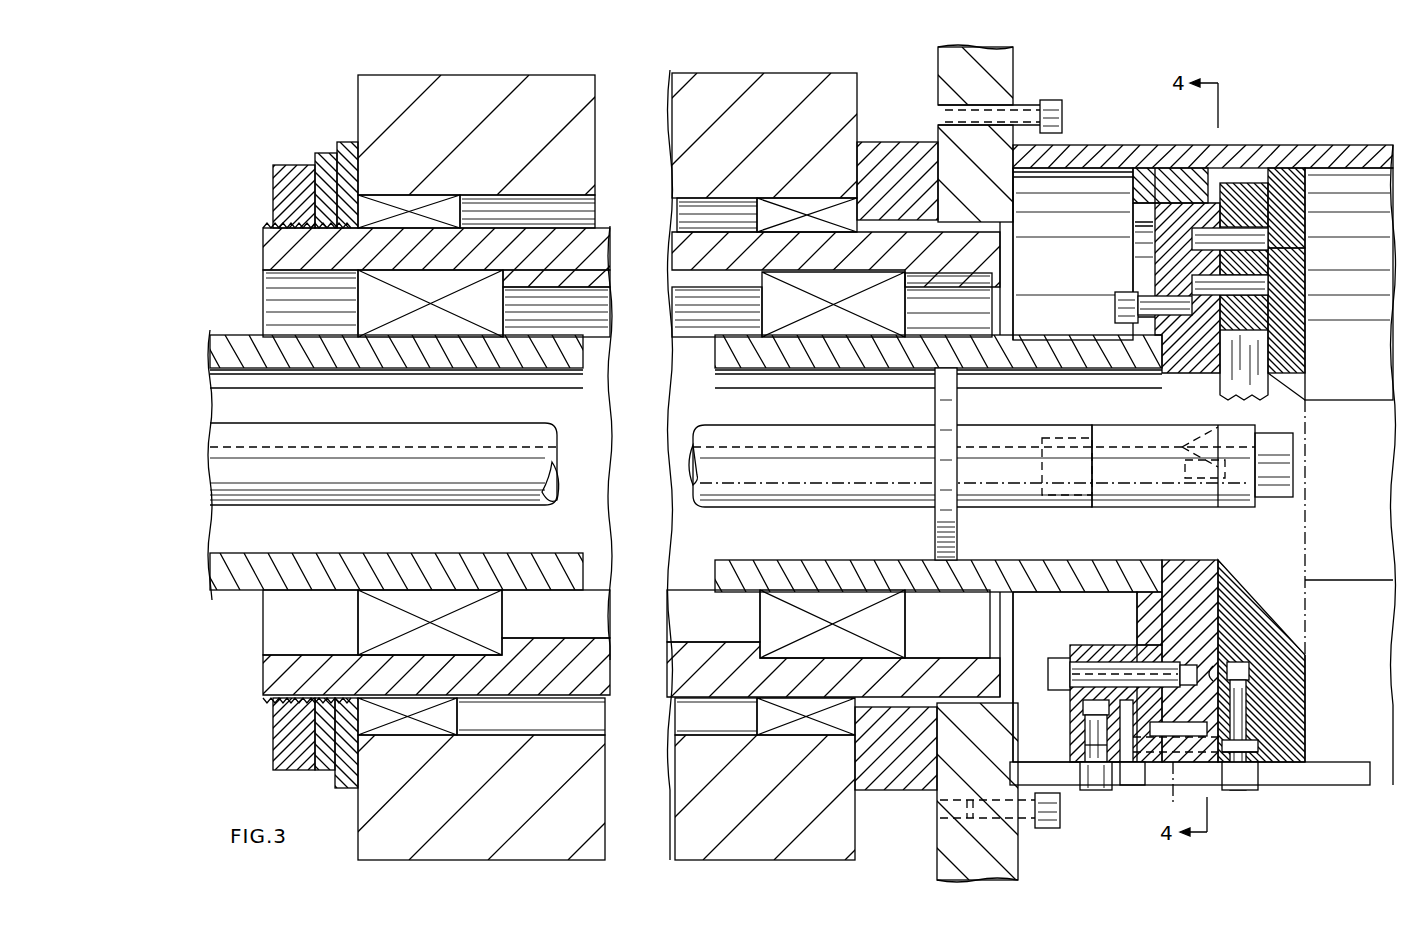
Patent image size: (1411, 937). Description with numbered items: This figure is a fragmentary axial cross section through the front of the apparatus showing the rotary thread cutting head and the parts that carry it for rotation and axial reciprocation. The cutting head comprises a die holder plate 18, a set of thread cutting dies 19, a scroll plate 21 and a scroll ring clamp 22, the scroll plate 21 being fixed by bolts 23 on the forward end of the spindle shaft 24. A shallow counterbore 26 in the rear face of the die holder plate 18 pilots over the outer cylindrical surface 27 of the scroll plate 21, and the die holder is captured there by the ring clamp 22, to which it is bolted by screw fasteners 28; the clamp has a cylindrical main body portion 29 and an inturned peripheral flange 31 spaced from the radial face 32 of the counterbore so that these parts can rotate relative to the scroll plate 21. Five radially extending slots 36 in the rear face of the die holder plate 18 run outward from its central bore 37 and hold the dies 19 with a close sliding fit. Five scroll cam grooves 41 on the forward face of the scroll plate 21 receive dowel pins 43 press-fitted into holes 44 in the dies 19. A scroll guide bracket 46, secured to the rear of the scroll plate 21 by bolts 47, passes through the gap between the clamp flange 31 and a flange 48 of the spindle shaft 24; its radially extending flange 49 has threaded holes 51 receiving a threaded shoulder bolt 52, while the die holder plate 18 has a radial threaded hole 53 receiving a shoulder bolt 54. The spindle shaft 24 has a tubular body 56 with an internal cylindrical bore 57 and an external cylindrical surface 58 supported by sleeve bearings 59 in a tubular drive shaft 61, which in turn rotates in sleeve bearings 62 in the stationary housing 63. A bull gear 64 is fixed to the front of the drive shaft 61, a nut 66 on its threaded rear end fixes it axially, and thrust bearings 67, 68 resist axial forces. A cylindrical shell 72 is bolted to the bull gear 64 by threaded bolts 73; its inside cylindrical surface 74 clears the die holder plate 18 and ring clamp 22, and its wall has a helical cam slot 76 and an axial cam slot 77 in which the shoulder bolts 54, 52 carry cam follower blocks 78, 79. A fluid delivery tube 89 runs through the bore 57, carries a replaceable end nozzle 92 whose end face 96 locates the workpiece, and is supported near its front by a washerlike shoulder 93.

The die holder plate 18 is at (1290, 330).
The thread cutting dies 19 is at (1260, 345).
The scroll plate 21 is at (1205, 620).
The scroll ring clamp 22 is at (1143, 202).
The bolts 23 is at (1115, 306).
The spindle shaft 24 is at (1018, 368).
The shallow counterbore 26 is at (1213, 718).
The outer cylindrical surface 27 is at (1220, 725).
The screw fasteners 28 is at (1170, 792).
The cylindrical main body portion 29 is at (1175, 183).
The peripheral flange 31 is at (1140, 222).
The radial face 32 is at (1228, 676).
The radially extending slots 36 is at (1251, 180).
The central bore 37 is at (1250, 560).
The scroll cam grooves 41 is at (1280, 223).
The dowel pins 43 is at (1241, 233).
The holes 44 is at (1250, 300).
The scroll guide bracket 46 is at (1105, 650).
The bolts 47 is at (1055, 681).
The flange 48 is at (1147, 617).
The radially extending flange 49 is at (1083, 710).
The threaded holes 51 is at (1088, 732).
The threaded shoulder bolt 52 is at (1092, 745).
The radial threaded hole 53 is at (1240, 745).
The shoulder bolt 54 is at (1240, 752).
The tubular body 56 is at (873, 360).
The internal cylindrical bore 57 is at (463, 373).
The external cylindrical surface 58 is at (247, 335).
The sleeve bearings 59 is at (372, 306).
The drive shaft 61 is at (600, 262).
The sleeve bearings 62 is at (420, 205).
The stationary housing 63 is at (838, 110).
The bull gear 64 is at (1005, 68).
The nut 66 is at (285, 209).
The thrust bearing 67 is at (346, 145).
The thrust bearing 68 is at (905, 158).
The cylindrical shell 72 is at (1090, 155).
The threaded bolts 73 is at (1055, 115).
The inside cylindrical surface 74 is at (1118, 175).
The helical cam slot 76 is at (1325, 780).
The axial cam slot 77 is at (1128, 780).
The cam follower block 78 is at (1238, 790).
The cam follower block 79 is at (1095, 790).
The fluid delivery tube 89 is at (870, 505).
The end nozzle 92 is at (1125, 503).
The washerlike shoulder 93 is at (958, 533).
The end face 96 is at (1293, 478).